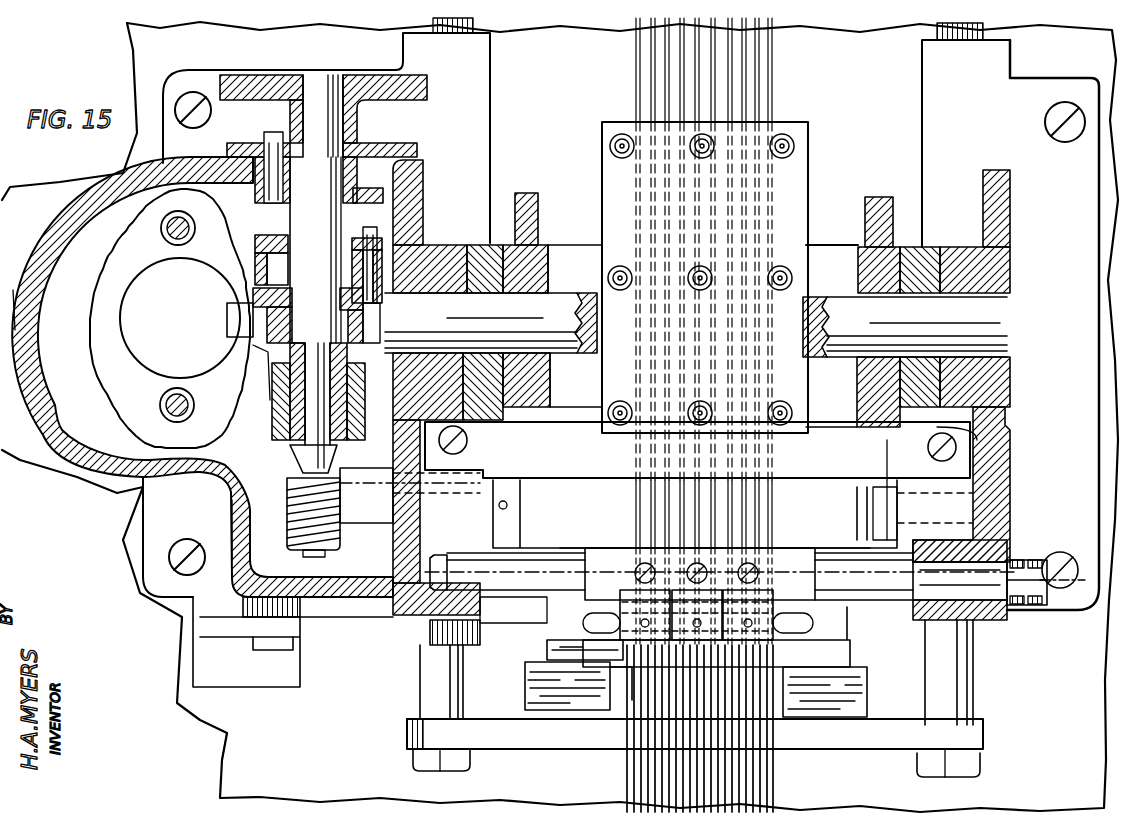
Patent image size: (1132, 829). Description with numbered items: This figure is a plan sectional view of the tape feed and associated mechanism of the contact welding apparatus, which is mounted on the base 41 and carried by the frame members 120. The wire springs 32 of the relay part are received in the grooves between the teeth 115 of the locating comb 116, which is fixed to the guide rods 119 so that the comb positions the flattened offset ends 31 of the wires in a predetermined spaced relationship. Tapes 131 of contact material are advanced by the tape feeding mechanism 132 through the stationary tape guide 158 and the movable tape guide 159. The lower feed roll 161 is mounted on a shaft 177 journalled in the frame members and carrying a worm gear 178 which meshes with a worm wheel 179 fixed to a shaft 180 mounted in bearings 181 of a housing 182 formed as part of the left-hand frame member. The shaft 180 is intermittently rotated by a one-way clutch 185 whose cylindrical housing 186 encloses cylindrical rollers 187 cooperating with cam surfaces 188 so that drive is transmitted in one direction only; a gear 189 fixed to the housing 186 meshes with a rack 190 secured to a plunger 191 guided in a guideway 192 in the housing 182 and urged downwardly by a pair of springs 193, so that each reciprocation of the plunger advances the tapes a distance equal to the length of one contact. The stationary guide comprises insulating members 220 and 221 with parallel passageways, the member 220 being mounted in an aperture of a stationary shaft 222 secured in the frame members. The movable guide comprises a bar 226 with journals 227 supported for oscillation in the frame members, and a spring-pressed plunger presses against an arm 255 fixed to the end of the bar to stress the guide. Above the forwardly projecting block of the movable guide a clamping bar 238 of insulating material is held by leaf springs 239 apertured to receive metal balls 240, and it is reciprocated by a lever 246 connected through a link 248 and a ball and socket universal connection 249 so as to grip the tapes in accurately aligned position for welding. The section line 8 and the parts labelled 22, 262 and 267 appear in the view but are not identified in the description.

The section line 8 is at (407, 575).
The guide rod 22 is at (467, 565).
The flattened offset ends 31 is at (783, 673).
The wire springs 32 is at (752, 774).
The base 41 is at (233, 750).
The teeth 115 is at (630, 687).
The locating comb 116 is at (540, 737).
The guide rods 119 is at (430, 695).
The frame members 120 is at (407, 243).
The tapes 131 is at (650, 72).
The tape feeding mechanism 132 is at (273, 493).
The stationary tape guide 158 is at (818, 152).
The movable tape guide 159 is at (855, 647).
The lower feed roll 161 is at (830, 503).
The shaft 177 is at (373, 473).
The worm gear 178 is at (313, 550).
The worm wheel 179 is at (290, 533).
The shaft 180 is at (357, 163).
The bearings 181 is at (263, 140).
The housing 182 is at (100, 185).
The one-way clutch 185 is at (268, 352).
The cylindrical housing 186 is at (263, 233).
The cylindrical rollers 187 is at (283, 260).
The cam surfaces 188 is at (267, 280).
The gear 189 is at (383, 323).
The rack 190 is at (272, 328).
The plunger 191 is at (112, 338).
The guideway 192 is at (97, 297).
The springs 193 is at (163, 227).
The stationary guide member 220 is at (797, 125).
The stationary guide member 221 is at (583, 473).
The stationary shaft 222 is at (980, 315).
The bar 226 is at (552, 540).
The journals 227 is at (987, 590).
The clamping bar 238 is at (530, 640).
The leaf springs 239 is at (620, 567).
The metal balls 240 is at (590, 610).
The lever 246 is at (233, 630).
The link 248 is at (357, 617).
The ball and socket universal connection 249 is at (443, 657).
The arm 255 is at (1035, 565).
The gear 262 is at (503, 247).
The gear 267 is at (557, 297).